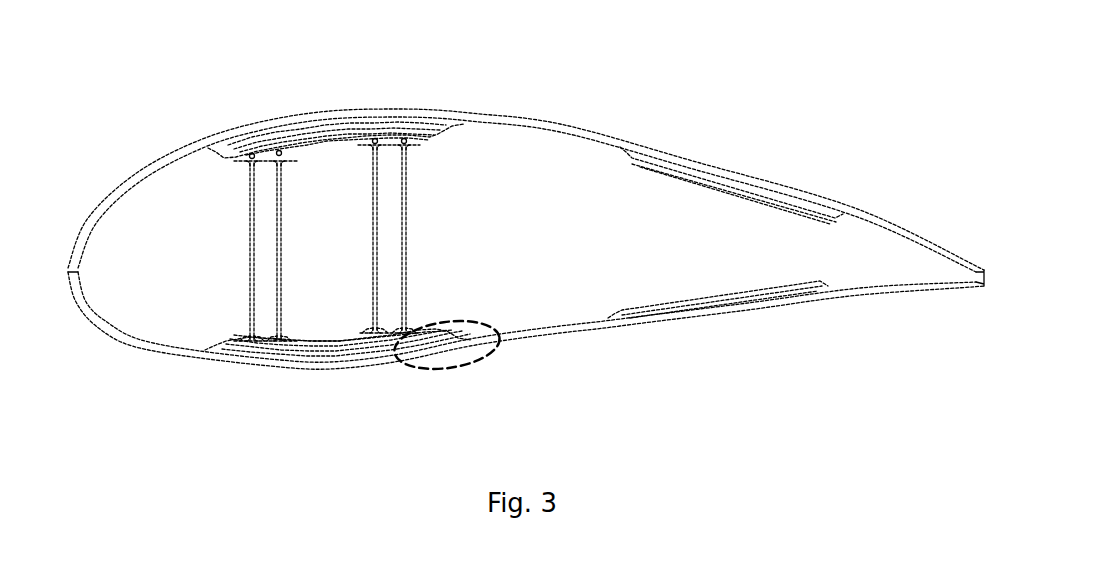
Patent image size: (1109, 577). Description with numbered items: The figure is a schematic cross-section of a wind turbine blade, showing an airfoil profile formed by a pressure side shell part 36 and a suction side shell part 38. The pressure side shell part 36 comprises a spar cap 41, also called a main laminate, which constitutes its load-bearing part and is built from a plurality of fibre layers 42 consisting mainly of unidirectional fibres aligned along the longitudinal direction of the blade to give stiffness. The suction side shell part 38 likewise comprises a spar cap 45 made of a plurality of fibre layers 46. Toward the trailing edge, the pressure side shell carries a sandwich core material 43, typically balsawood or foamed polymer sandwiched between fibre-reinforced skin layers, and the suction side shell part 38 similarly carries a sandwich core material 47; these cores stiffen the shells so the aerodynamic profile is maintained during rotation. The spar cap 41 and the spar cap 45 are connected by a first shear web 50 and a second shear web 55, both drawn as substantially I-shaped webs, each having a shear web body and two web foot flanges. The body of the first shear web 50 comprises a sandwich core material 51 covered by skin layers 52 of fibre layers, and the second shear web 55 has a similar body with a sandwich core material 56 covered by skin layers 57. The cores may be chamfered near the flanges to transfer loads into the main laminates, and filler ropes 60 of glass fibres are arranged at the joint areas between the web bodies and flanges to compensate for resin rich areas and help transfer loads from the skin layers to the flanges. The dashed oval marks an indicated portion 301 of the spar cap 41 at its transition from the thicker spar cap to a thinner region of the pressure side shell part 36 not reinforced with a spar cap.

The pressure side shell part 36 is at (578, 338).
The suction side shell part 38 is at (563, 125).
The spar cap 41 is at (423, 366).
The fibre layers 42 is at (346, 363).
The sandwich core material 43 is at (725, 300).
The spar cap 45 is at (296, 118).
The fibre layers 46 is at (408, 112).
The sandwich core material 47 is at (723, 170).
The first shear web 50 is at (283, 246).
The sandwich core material 51 is at (284, 234).
The skin layers 52 is at (283, 193).
The second shear web 55 is at (417, 236).
The sandwich core material 56 is at (410, 230).
The skin layers 57 is at (406, 208).
The filler ropes 60 is at (366, 150).
The indicated portion 301 is at (478, 368).